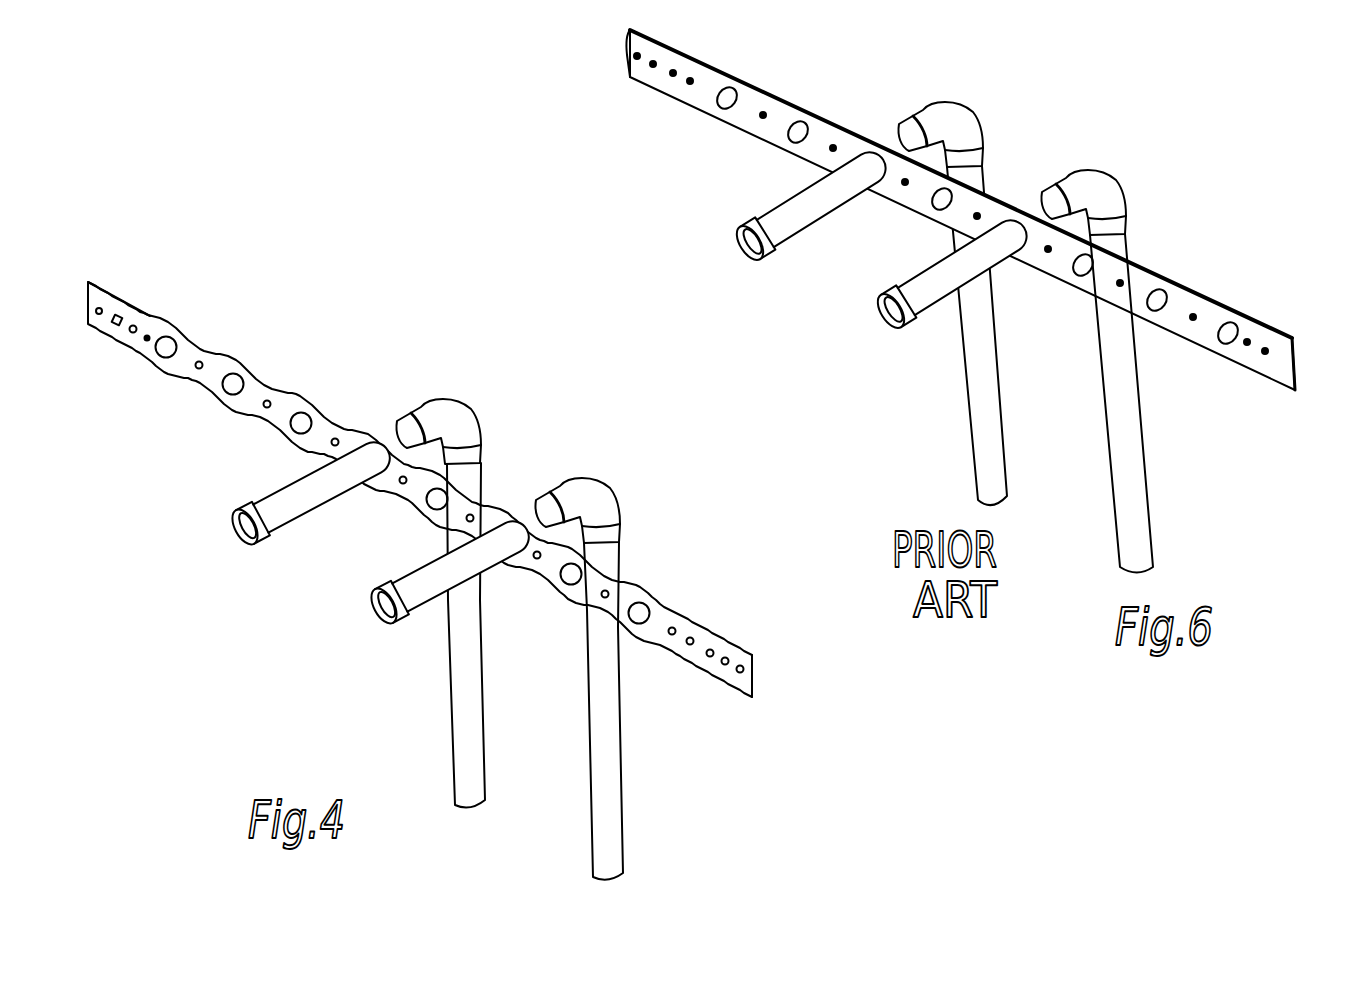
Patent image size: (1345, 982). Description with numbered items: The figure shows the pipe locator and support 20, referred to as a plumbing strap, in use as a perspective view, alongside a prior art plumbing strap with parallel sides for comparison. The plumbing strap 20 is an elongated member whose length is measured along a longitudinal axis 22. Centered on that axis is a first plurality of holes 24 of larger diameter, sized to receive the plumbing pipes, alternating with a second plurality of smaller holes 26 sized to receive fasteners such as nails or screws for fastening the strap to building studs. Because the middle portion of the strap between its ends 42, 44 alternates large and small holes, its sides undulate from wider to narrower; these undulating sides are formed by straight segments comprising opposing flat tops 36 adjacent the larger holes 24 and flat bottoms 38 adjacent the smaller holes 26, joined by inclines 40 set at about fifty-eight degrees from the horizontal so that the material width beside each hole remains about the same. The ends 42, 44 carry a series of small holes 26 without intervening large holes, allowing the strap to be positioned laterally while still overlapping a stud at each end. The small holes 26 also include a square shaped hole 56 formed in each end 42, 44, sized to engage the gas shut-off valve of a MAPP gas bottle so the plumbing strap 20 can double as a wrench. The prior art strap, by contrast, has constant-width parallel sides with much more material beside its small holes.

The pipe locator and support 20 is at (454, 484).
The longitudinal axis 22 is at (643, 609).
The first plurality of holes 24 is at (600, 593).
The second plurality of smaller holes 26 is at (747, 681).
The flat tops 36 is at (247, 366).
The flat bottoms 38 is at (205, 351).
The inclines 40 is at (260, 378).
The end 42 is at (737, 700).
The end 44 is at (131, 324).
The shaped holes 56 is at (117, 326).